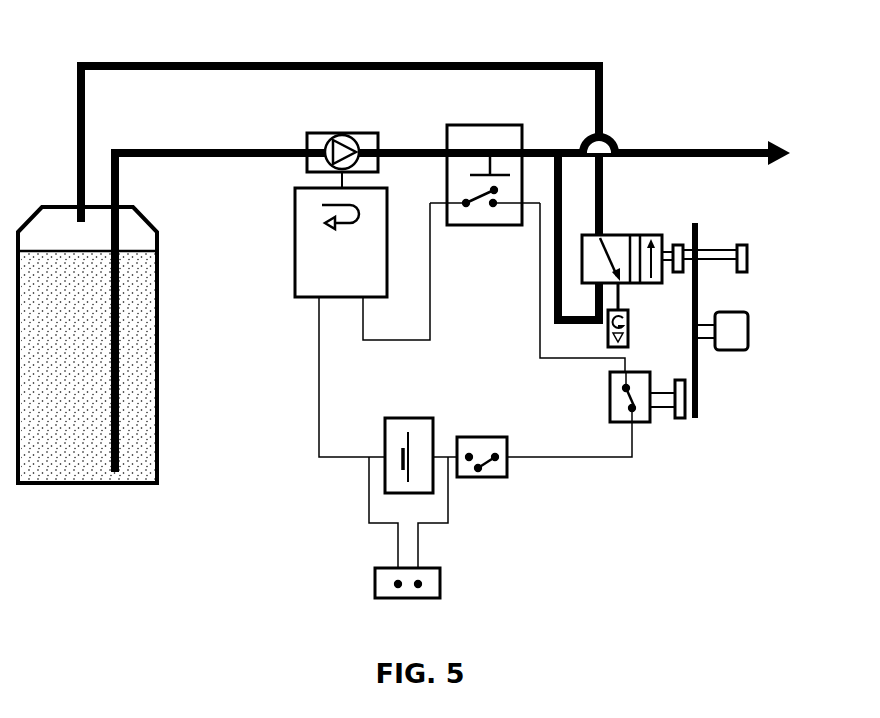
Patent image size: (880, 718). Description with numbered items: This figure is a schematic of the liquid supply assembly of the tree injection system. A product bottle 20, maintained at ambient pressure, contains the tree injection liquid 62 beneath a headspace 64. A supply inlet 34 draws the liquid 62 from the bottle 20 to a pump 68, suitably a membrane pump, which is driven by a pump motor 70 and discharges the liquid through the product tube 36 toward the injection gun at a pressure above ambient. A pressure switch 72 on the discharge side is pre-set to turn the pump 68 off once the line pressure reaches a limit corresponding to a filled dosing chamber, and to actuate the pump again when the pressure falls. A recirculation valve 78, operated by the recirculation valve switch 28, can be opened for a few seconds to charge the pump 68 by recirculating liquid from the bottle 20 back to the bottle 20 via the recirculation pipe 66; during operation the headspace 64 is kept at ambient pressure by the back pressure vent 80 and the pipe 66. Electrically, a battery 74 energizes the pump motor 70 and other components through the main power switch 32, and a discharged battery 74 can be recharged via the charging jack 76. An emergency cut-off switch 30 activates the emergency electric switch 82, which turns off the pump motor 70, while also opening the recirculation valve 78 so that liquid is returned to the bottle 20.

The product bottle 20 is at (55, 460).
The liquid 62 is at (60, 404).
The headspace 64 is at (58, 220).
The supply inlet 34 is at (117, 440).
The recirculation pipe 66 is at (172, 62).
The pump 68 is at (315, 133).
The pump motor 70 is at (305, 244).
The pressure switch 72 is at (471, 130).
The product tube 36 is at (655, 150).
The recirculation valve 78 is at (612, 243).
The back pressure vent 80 is at (632, 323).
The recirculation valve switch 28 is at (758, 257).
The emergency cut-off switch 30 is at (762, 334).
The emergency electric switch 82 is at (637, 416).
The battery 74 is at (392, 432).
The power switch 32 is at (507, 470).
The charging jack 76 is at (440, 592).